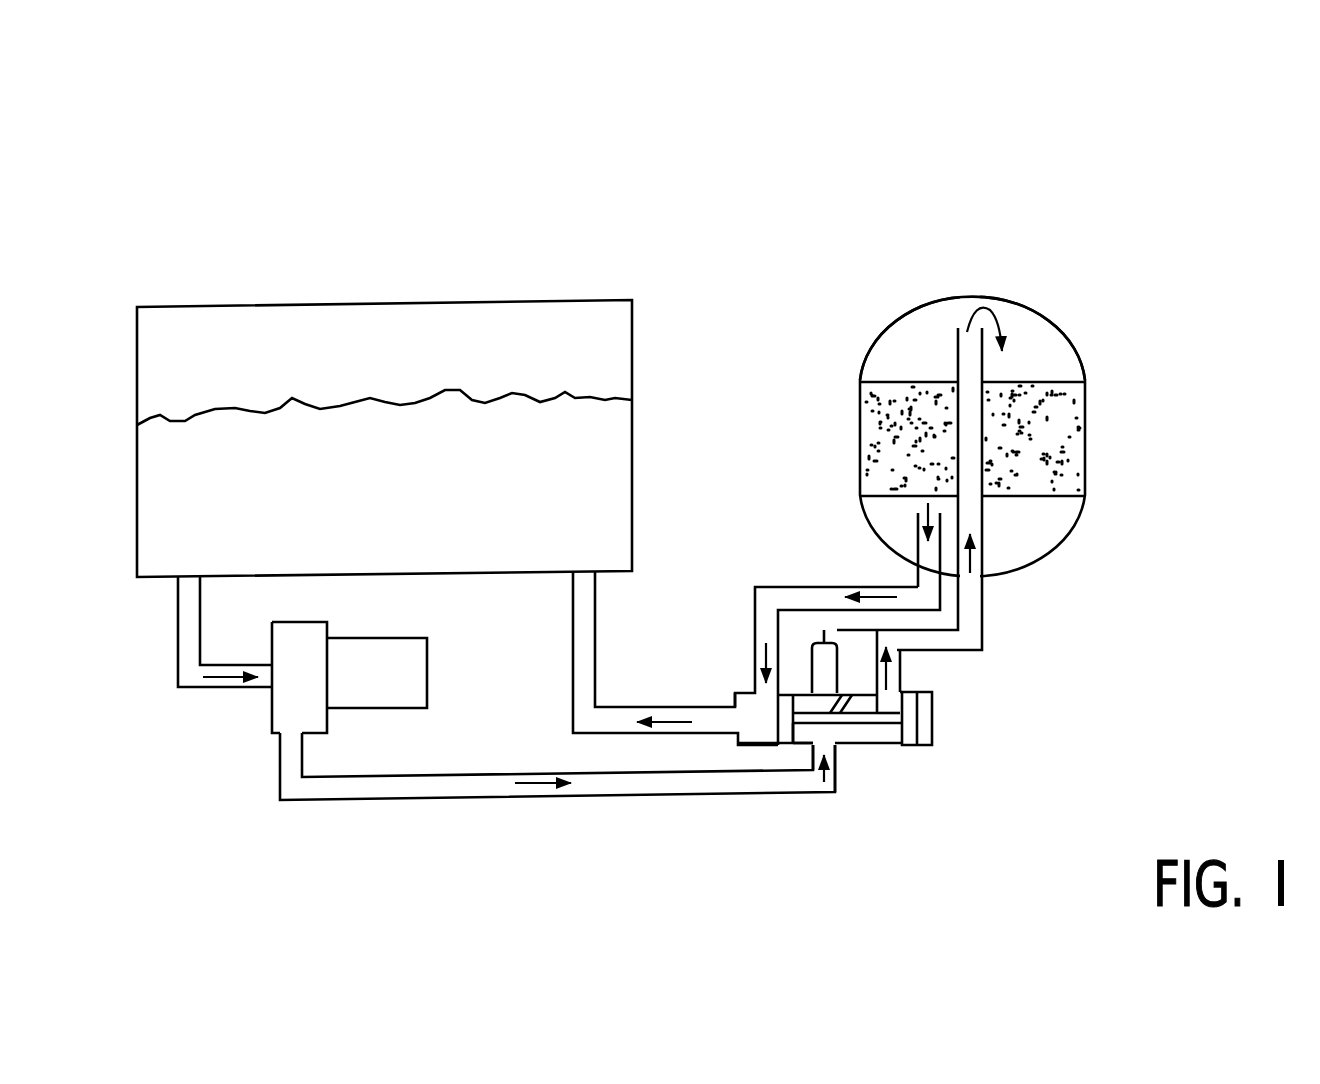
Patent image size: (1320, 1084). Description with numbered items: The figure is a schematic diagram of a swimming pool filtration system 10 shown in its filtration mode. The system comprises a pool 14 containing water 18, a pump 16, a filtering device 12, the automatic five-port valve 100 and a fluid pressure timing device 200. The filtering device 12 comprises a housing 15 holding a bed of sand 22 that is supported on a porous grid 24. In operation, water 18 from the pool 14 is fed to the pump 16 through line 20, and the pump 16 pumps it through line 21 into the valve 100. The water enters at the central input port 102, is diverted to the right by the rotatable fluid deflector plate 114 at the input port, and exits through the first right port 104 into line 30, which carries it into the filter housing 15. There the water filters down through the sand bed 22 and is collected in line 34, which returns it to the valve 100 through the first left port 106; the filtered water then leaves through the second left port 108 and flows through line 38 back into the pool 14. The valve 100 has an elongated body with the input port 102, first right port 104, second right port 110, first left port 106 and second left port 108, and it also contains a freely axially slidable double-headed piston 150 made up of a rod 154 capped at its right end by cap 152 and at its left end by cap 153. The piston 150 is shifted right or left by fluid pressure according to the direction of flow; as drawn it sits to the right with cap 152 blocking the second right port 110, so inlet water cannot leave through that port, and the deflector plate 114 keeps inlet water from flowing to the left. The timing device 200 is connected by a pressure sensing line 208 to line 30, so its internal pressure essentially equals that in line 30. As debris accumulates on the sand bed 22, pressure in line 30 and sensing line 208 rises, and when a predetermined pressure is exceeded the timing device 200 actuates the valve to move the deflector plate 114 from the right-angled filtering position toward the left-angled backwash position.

The swimming pool filtration system 10 is at (812, 133).
The filtering device 12 is at (1073, 338).
The pool 14 is at (383, 298).
The housing 15 is at (1033, 302).
The pump 16 is at (432, 681).
The water 18 is at (188, 416).
The line 20 is at (173, 633).
The line 21 is at (377, 803).
The bed of sand 22 is at (1068, 405).
The porous grid 24 is at (1055, 491).
The line 30 is at (955, 334).
The line 34 is at (917, 578).
The line 38 is at (610, 707).
The valve 100 is at (873, 728).
The input port 102 is at (820, 740).
The first right port 104 is at (903, 691).
The first left port 106 is at (762, 693).
The second left port 108 is at (740, 718).
The second right port 110 is at (933, 704).
The fluid deflector plate 114 is at (851, 752).
The double-headed piston 150 is at (900, 747).
The cap 152 is at (882, 740).
The cap 153 is at (805, 733).
The rod 154 is at (815, 722).
The timing device 200 is at (822, 658).
The pressure sensing line 208 is at (830, 638).